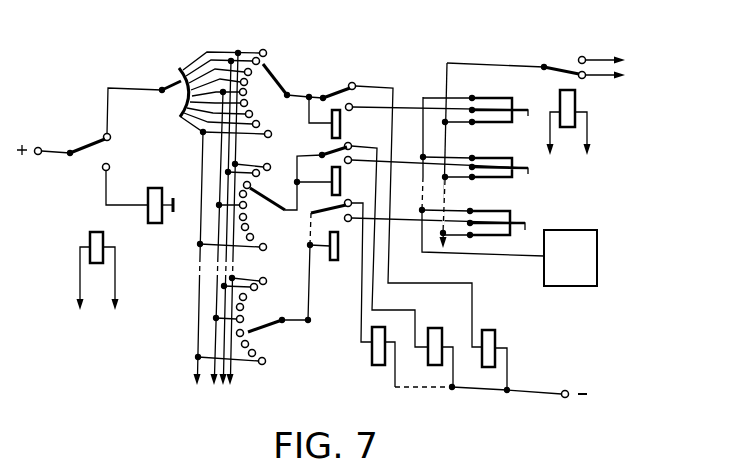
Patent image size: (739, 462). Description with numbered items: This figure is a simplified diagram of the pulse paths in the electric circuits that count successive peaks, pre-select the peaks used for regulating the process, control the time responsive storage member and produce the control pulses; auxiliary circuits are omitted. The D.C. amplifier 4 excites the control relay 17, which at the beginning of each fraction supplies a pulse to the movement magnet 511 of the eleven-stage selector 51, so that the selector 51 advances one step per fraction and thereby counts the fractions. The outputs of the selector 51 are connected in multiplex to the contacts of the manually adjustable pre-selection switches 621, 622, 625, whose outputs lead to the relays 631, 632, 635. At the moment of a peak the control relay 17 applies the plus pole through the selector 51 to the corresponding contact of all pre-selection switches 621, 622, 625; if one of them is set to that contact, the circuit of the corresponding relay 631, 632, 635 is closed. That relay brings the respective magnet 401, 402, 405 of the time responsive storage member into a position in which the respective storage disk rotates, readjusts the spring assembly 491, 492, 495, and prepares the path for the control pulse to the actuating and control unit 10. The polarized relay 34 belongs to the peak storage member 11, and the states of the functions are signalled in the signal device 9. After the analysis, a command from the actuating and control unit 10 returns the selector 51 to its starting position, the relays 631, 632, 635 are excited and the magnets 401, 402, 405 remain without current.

The selector 51 is at (175, 78).
The movement magnet 511 is at (148, 218).
The control relay 17 is at (90, 237).
The D.C. amplifier 4 is at (98, 291).
The pre-selection switch 621 is at (270, 63).
The pre-selection switch 622 is at (258, 203).
The pre-selection switch 625 is at (255, 322).
The relay 631 is at (340, 126).
The relay 632 is at (340, 184).
The relay 635 is at (340, 256).
The spring assembly 491 is at (481, 85).
The spring assembly 492 is at (469, 157).
The spring assembly 495 is at (468, 205).
The signal device 9 is at (591, 70).
The polarized relay 34 is at (577, 102).
The peak storage member 11 is at (569, 144).
The actuating and control unit 10 is at (584, 274).
The magnet 401 is at (498, 335).
The magnet 402 is at (455, 316).
The magnet 405 is at (380, 367).